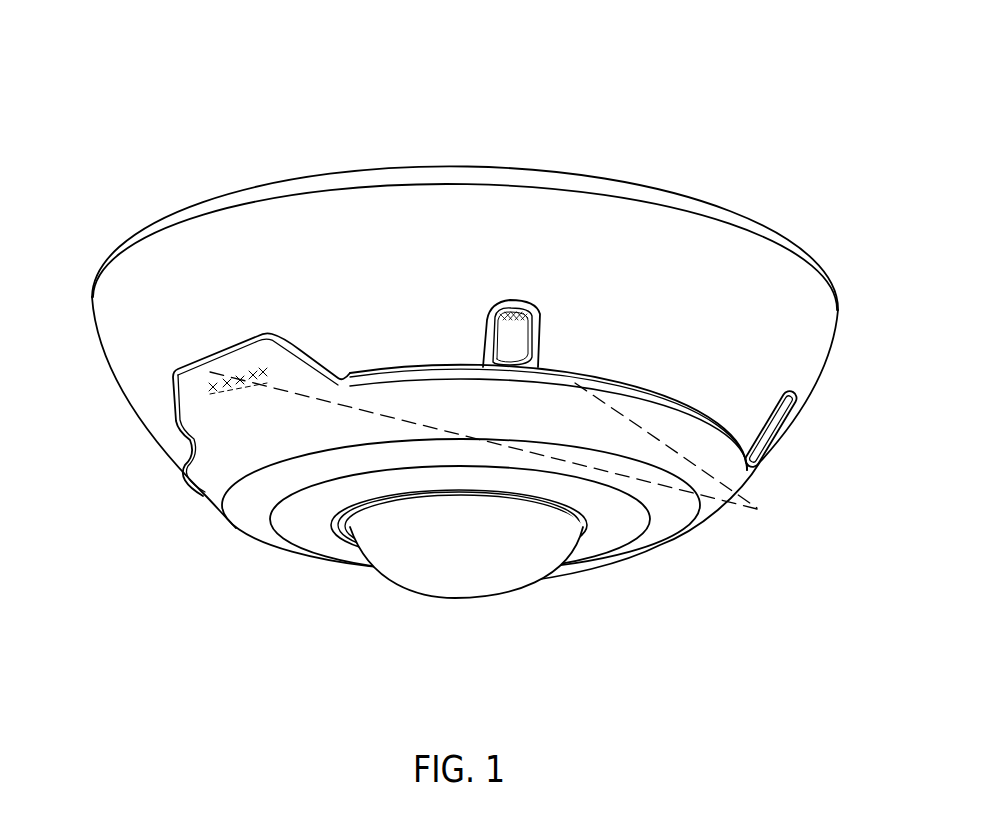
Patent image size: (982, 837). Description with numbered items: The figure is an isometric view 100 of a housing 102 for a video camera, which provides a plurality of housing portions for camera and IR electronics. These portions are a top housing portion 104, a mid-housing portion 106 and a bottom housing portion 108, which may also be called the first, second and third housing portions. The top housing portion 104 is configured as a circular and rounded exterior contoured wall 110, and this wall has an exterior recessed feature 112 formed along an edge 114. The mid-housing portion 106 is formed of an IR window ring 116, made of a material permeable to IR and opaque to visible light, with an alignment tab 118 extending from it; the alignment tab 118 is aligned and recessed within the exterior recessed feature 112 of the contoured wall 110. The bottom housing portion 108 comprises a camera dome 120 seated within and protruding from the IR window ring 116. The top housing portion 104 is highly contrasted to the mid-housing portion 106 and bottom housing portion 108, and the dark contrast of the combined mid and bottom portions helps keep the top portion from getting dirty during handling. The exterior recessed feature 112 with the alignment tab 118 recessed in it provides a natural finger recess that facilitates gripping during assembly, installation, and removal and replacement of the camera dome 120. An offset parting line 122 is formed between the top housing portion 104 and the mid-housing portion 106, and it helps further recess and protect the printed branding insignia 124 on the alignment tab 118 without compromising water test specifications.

The isometric view 100 is at (199, 56).
The housing 102 is at (847, 272).
The top housing portion 104 is at (420, 227).
The mid-housing portion 106 is at (610, 424).
The bottom housing portion 108 is at (323, 538).
The circular and rounded exterior contoured wall 110 is at (80, 300).
The exterior recessed feature 112 is at (224, 346).
The edge 114 is at (433, 366).
The IR window ring 116 is at (670, 513).
The alignment tab 118 is at (228, 413).
The camera dome 120 is at (453, 570).
The offset parting line 122 is at (764, 510).
The printed branding insignia 124 is at (284, 371).